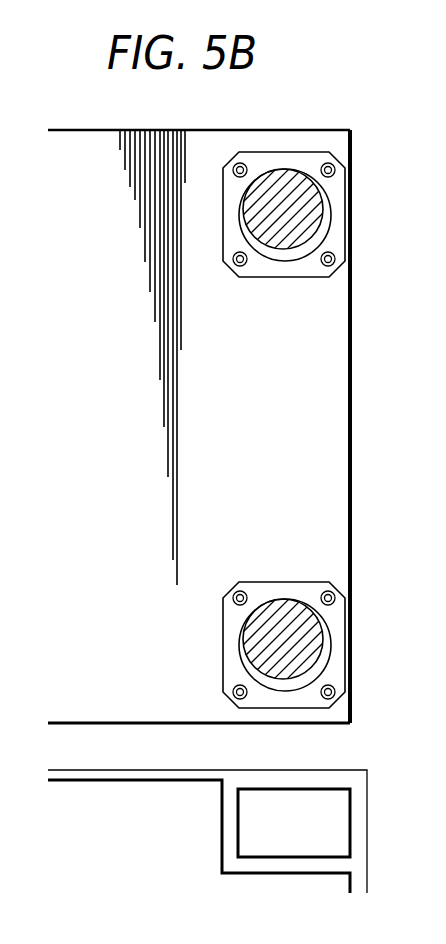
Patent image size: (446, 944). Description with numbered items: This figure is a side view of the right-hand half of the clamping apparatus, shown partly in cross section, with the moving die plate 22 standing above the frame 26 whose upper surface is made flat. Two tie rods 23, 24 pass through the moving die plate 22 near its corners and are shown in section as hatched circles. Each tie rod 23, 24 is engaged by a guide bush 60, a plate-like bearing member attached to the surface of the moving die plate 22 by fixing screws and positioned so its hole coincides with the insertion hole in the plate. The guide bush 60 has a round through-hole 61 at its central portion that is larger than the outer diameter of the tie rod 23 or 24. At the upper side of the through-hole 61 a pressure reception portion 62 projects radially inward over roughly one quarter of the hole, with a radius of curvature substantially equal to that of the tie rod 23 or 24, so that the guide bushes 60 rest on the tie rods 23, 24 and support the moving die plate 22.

The moving die plate 22 is at (90, 148).
The tie rod 23 is at (305, 205).
The tie rod 24 is at (305, 632).
The frame 26 is at (353, 770).
The guide bush 60 is at (300, 152).
The through-hole 61 is at (312, 224).
The pressure reception portion 62 is at (260, 170).